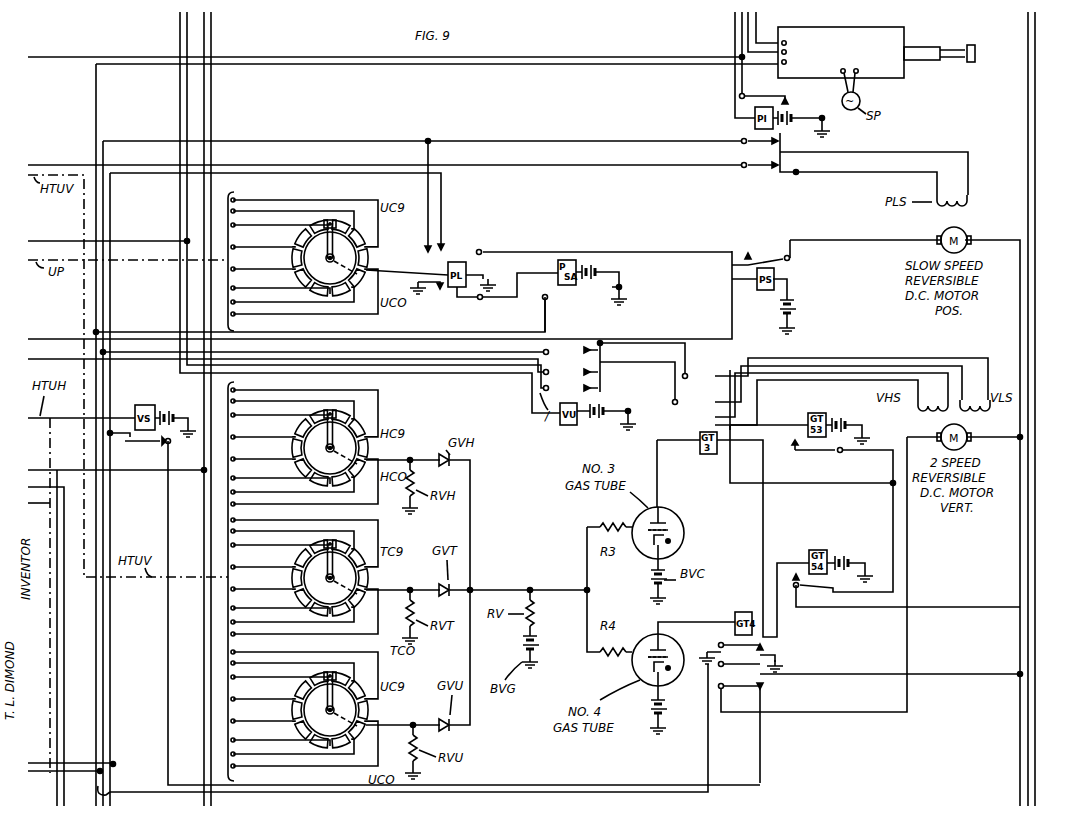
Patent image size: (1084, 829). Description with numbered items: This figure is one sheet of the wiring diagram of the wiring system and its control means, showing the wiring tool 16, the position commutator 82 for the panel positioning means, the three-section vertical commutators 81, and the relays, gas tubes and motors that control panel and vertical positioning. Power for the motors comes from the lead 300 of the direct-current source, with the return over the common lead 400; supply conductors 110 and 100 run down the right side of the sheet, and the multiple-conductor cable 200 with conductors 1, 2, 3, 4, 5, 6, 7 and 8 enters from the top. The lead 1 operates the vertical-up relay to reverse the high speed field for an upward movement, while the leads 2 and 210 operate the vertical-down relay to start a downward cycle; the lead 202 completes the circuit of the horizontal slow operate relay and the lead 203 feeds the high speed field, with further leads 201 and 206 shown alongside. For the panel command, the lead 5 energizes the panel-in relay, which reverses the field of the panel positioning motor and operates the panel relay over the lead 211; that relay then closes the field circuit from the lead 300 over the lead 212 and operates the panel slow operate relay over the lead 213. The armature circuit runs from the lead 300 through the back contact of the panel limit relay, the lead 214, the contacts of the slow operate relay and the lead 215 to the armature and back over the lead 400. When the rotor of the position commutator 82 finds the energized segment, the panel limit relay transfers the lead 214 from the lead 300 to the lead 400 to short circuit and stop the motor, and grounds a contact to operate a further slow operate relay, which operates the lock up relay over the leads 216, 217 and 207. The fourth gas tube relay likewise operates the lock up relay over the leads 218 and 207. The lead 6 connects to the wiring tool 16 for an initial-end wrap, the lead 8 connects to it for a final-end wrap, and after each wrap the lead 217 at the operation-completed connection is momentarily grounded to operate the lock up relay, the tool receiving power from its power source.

The lead 1 is at (180, 22).
The lead 2 is at (187, 42).
The conductor 3 is at (211, 42).
The conductor 4 is at (204, 22).
The lead 5 is at (735, 18).
The lead 6 is at (756, 18).
The conductor 7 is at (742, 30).
The lead 8 is at (748, 44).
The wiring tool 16 is at (900, 80).
The three-section commutator 81 is at (364, 581).
The single section commutator 82 is at (307, 255).
The supply conductor 100 is at (1035, 80).
The supply conductor 110 is at (1028, 80).
The cable 200 is at (204, 693).
The conductor 201 is at (125, 470).
The lead 202 is at (57, 598).
The lead 203 is at (64, 617).
The conductor 206 is at (90, 795).
The lead 207 is at (112, 755).
The lead 210 is at (40, 241).
The lead 211 is at (52, 57).
The lead 212 is at (52, 165).
The lead 213 is at (50, 339).
The lead 214 is at (585, 251).
The lead 215 is at (832, 240).
The lead 216 is at (480, 333).
The lead 217 is at (98, 88).
The lead 218 is at (124, 792).
The lead 300 is at (110, 292).
The common lead 400 is at (258, 141).